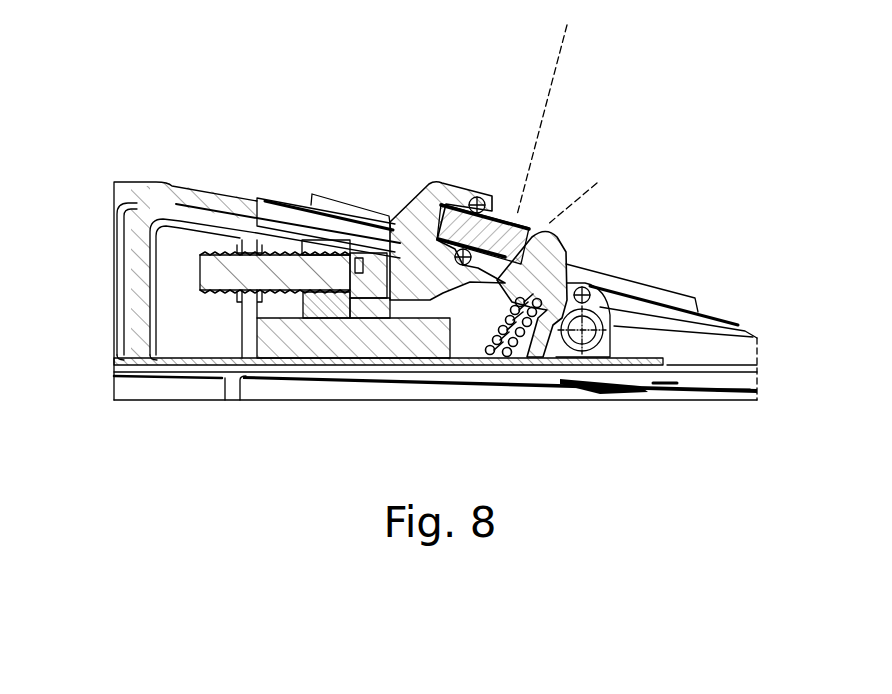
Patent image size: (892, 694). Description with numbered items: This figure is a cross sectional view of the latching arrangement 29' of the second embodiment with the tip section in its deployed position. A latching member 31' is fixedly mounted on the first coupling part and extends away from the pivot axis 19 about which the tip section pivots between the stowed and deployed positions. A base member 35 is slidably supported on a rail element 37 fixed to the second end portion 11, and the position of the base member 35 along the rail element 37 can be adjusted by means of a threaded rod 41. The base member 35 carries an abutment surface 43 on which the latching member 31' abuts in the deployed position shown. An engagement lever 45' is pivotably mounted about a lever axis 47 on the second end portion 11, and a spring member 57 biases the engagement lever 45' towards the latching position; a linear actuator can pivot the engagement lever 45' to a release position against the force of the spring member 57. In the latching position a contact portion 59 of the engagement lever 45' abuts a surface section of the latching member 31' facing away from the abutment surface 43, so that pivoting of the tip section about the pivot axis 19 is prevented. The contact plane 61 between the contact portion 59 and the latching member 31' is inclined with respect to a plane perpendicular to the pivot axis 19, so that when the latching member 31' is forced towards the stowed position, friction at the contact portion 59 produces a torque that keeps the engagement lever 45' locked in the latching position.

The second end portion 11 is at (133, 197).
The pivot axis 19 is at (585, 40).
The latching arrangement 29' is at (362, 114).
The latching member 31' is at (483, 186).
The base member 35 is at (418, 277).
The rail element 37 is at (328, 330).
The threaded rod 41 is at (218, 280).
The abutment surface 43 is at (433, 220).
The engagement lever 45' is at (569, 279).
The lever axis 47 is at (593, 377).
The spring member 57 is at (510, 347).
The contact portion 59 is at (552, 323).
The contact plane 61 is at (580, 187).